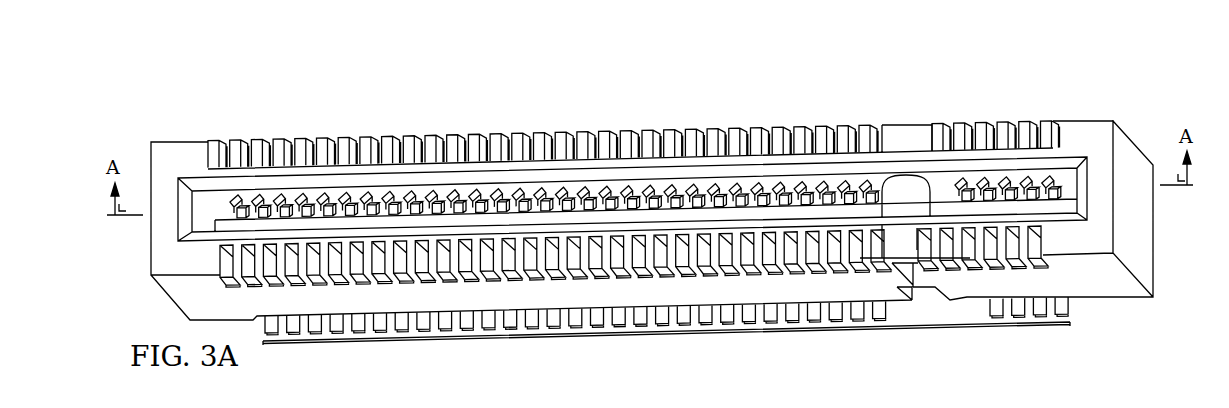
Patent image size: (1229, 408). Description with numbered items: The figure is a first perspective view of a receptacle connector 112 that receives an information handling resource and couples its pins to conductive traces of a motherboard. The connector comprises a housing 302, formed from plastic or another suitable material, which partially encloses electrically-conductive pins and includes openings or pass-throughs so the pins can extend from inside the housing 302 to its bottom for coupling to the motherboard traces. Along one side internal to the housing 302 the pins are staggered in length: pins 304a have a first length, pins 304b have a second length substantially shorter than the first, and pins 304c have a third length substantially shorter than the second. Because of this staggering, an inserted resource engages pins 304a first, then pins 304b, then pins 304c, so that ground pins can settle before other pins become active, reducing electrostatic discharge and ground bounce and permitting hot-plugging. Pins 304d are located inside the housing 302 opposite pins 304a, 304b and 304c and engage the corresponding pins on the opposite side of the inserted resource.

The receptacle connector 112 is at (1101, 59).
The housing 302 is at (1143, 226).
The pins 304a is at (228, 198).
The pins 304b is at (255, 198).
The pins 304c is at (263, 211).
The pins 304d is at (657, 334).